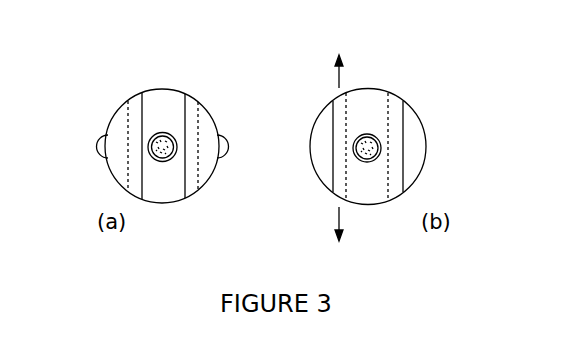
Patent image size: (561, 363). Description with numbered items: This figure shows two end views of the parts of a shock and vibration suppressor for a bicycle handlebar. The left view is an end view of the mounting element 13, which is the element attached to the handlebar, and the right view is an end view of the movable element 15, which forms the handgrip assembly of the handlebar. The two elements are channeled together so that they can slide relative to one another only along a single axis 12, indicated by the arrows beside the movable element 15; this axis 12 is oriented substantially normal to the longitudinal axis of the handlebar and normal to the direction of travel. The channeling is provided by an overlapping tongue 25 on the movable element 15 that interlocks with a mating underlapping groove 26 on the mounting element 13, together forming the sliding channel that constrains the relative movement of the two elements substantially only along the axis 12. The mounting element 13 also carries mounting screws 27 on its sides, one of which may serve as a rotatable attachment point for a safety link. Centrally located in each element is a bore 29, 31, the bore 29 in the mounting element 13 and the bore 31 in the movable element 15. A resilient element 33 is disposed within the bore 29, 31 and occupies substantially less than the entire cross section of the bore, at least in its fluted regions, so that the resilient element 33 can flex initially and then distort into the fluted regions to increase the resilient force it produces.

The axis 12 is at (338, 76).
The mounting element 13 is at (118, 122).
The movable element 15 is at (417, 139).
The tongue 25 is at (400, 101).
The groove 26 is at (135, 102).
The mounting screws 27 is at (98, 147).
The bore 29 is at (165, 162).
The bore 31 is at (359, 158).
The resilient element 33 is at (163, 133).